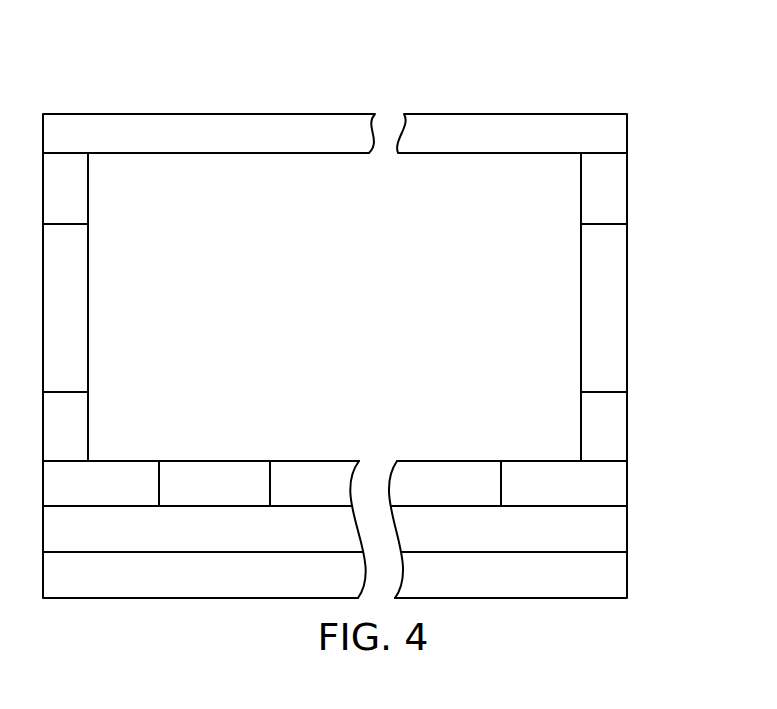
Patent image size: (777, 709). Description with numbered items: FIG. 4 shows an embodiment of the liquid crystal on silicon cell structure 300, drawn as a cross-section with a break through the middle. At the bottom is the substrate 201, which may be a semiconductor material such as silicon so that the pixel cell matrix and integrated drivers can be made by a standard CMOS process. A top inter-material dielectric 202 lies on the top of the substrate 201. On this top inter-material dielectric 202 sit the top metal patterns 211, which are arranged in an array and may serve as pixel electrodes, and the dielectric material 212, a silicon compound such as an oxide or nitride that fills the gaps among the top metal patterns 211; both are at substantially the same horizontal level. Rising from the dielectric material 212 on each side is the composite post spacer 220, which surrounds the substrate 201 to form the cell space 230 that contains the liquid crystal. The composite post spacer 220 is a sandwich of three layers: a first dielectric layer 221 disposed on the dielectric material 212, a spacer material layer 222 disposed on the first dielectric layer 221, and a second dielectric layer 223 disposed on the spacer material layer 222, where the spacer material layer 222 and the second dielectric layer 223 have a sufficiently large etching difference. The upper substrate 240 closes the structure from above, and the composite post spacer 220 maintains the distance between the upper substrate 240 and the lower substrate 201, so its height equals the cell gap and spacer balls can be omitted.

The liquid crystal on silicon cell structure 300 is at (582, 96).
The upper substrate 240 is at (284, 146).
The cell space 230 is at (345, 356).
The composite post spacer 220 is at (635, 154).
The second dielectric layer 223 is at (48, 198).
The spacer material layer 222 is at (48, 326).
The first dielectric layer 221 is at (48, 437).
The dielectric material 212 is at (84, 499).
The top metal pattern 211 is at (196, 499).
The top inter-material dielectric 202 is at (306, 541).
The substrate 201 is at (306, 586).